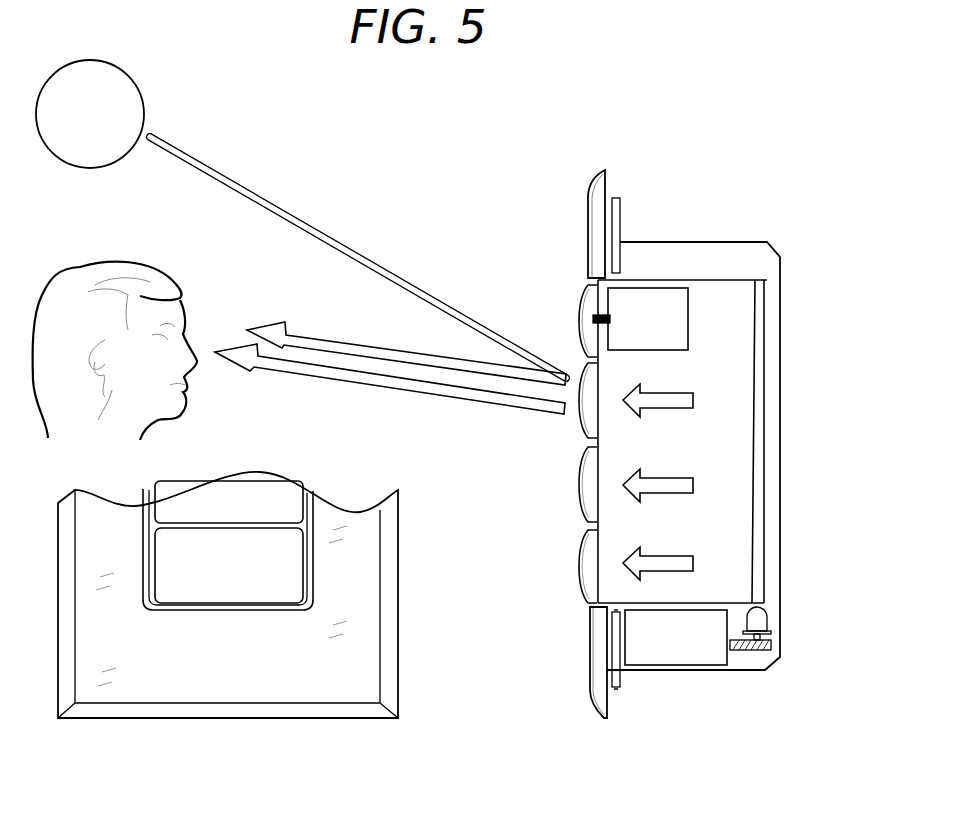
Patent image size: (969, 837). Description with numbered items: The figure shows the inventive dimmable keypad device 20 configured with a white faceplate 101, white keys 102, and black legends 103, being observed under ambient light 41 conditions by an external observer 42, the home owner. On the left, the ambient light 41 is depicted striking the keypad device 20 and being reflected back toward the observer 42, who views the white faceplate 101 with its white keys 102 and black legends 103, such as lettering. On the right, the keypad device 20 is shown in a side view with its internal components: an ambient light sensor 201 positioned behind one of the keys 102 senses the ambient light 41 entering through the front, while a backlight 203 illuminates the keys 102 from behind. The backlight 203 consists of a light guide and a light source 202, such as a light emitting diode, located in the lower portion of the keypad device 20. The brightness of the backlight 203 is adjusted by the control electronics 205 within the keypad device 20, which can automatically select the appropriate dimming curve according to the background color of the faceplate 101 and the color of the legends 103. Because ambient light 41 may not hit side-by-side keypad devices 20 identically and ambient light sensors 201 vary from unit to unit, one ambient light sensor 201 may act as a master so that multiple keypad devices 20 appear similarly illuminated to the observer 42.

The ambient light 41 is at (144, 104).
The external observer 42 is at (184, 297).
The white faceplate 101 is at (398, 655).
The white keys 102 is at (581, 299).
The black legends 103 is at (572, 307).
The ambient light sensor 201 is at (685, 290).
The light source 202 is at (769, 617).
The backlight 203 is at (758, 533).
The control electronics 205 is at (660, 666).
The dimmable keypad device 20 is at (776, 692).